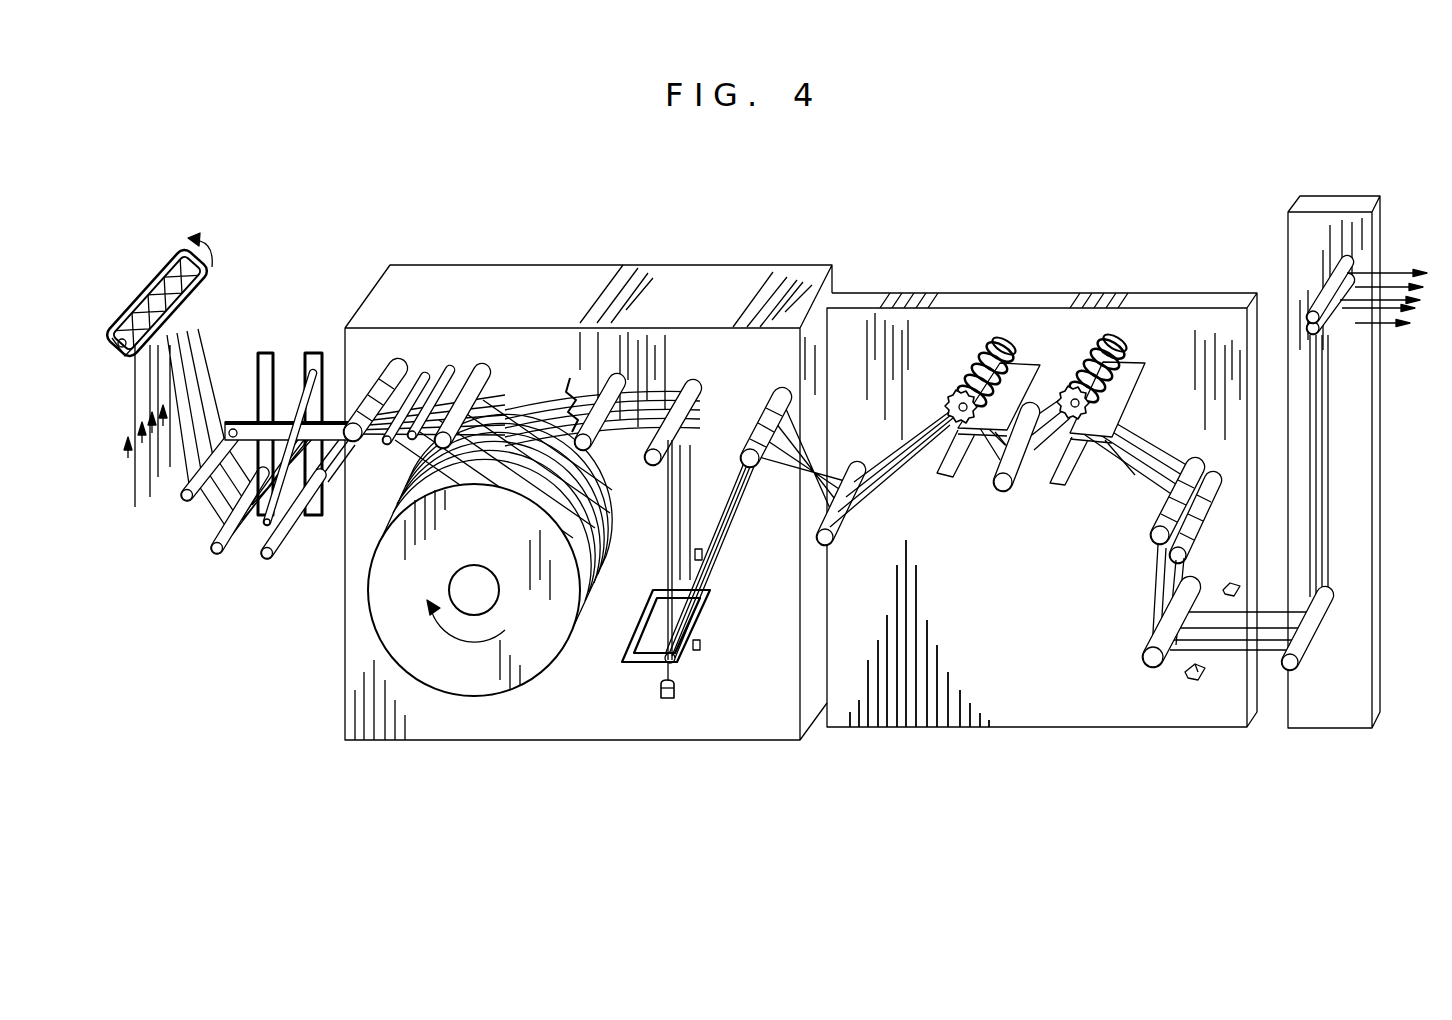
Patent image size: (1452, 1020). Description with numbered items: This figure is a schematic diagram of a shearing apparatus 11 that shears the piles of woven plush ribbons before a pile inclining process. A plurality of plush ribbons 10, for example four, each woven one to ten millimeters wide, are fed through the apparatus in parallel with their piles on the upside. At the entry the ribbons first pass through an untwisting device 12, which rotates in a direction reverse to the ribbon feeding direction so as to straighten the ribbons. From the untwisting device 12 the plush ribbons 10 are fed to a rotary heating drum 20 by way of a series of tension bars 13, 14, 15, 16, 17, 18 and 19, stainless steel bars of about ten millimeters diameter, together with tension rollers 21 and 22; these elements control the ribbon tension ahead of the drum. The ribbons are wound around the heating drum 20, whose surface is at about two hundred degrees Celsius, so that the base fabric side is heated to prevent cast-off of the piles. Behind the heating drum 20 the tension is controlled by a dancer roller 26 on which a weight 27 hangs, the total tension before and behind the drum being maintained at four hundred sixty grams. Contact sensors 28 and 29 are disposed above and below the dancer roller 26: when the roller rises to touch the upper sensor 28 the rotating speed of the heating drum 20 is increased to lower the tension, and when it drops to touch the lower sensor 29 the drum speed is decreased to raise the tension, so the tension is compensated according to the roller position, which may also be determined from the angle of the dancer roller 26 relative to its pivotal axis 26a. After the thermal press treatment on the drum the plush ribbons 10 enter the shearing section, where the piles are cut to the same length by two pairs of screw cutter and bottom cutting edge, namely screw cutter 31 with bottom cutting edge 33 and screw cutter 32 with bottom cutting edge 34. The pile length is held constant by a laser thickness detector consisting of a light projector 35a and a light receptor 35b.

The plush ribbon 10 is at (200, 313).
The shearing apparatus 11 is at (934, 208).
The untwisting device 12 is at (180, 248).
The tension bar 13 is at (187, 502).
The tension bar 14 is at (217, 555).
The tension bar 15 is at (292, 380).
The tension bar 16 is at (266, 527).
The tension bar 17 is at (268, 560).
The tension bar 18 is at (425, 375).
The tension bar 19 is at (451, 368).
The rotary heating drum 20 is at (470, 695).
The tension roller 21 is at (397, 365).
The tension roller 22 is at (484, 368).
The dancer roller 26 is at (677, 658).
The pivotal axis 26a is at (622, 652).
The weight 27 is at (668, 700).
The upper contact sensor 28 is at (700, 548).
The lower contact sensor 29 is at (702, 645).
The screw cutter 31 is at (990, 340).
The screw cutter 32 is at (1108, 340).
The bottom cutting edge 33 is at (1025, 368).
The bottom cutting edge 34 is at (1130, 368).
The light projector 35a is at (1192, 683).
The light receptor 35b is at (1216, 567).